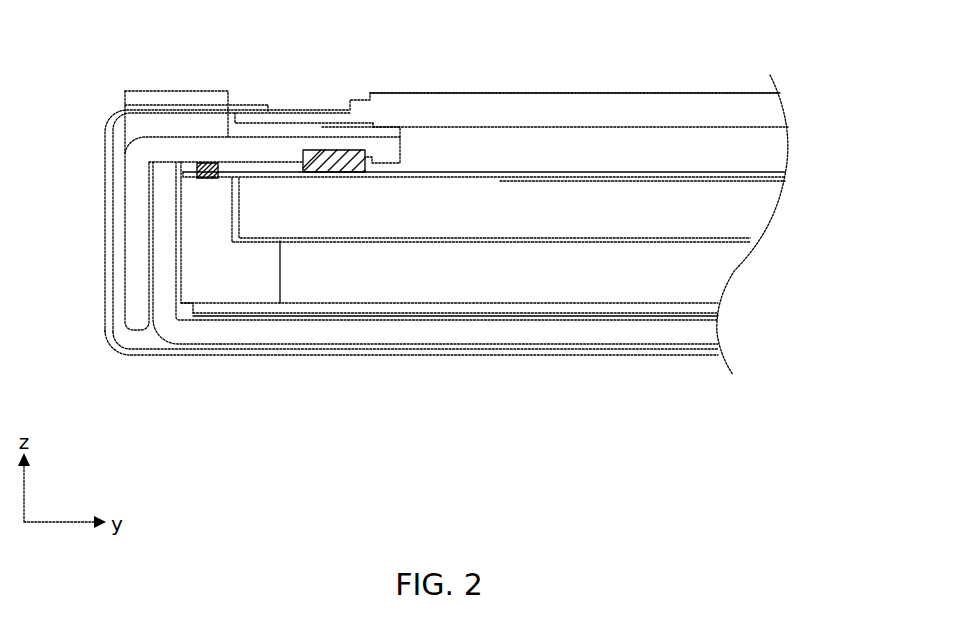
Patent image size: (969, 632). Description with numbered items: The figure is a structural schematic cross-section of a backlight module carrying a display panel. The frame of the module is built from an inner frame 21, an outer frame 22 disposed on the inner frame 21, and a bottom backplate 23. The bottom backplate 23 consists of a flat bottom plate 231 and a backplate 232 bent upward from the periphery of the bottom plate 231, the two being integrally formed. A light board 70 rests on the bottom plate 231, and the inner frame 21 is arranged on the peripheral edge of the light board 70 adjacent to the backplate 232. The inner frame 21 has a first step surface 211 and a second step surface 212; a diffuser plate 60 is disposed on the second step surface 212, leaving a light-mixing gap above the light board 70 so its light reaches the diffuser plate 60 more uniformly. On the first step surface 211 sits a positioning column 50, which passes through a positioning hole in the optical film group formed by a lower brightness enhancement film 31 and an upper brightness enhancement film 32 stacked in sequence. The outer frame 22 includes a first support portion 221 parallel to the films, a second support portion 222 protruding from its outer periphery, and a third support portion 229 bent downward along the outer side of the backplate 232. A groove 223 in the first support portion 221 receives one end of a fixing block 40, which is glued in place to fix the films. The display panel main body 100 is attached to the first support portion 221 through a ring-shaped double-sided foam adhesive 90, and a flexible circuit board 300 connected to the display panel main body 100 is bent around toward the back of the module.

The display panel main body 100 is at (548, 107).
The flexible circuit board 300 is at (110, 168).
The positioning column 50 is at (200, 163).
The fixing block 40 is at (320, 150).
The ring-shaped double-sided foam adhesive 90 is at (388, 125).
The groove 223 is at (372, 157).
The second support portion 222 is at (167, 91).
The first support portion 221 is at (263, 146).
The outer frame 22 is at (218, 532).
The upper brightness enhancement film 32 is at (768, 170).
The lower brightness enhancement film 31 is at (755, 178).
The diffuser plate 60 is at (693, 223).
The bottom backplate 23 is at (693, 333).
The third support portion 229 is at (137, 232).
The backplate 232 is at (162, 293).
The bottom plate 231 is at (417, 330).
The inner frame 21 is at (242, 297).
The first step surface 211 is at (190, 180).
The second step surface 212 is at (263, 240).
The light board 70 is at (553, 310).